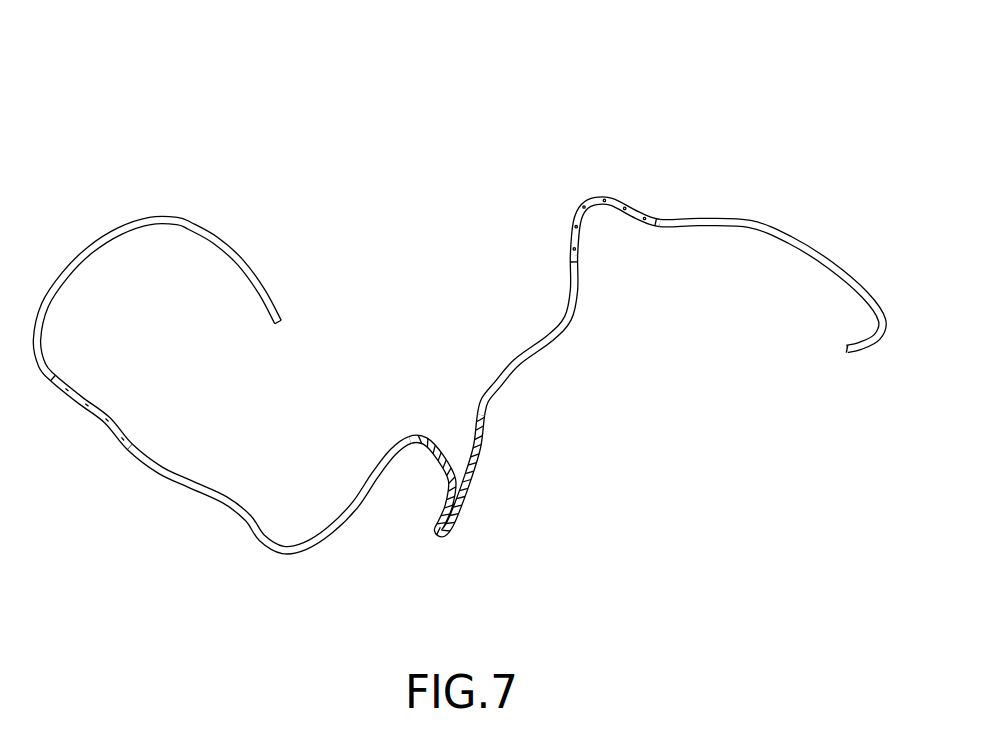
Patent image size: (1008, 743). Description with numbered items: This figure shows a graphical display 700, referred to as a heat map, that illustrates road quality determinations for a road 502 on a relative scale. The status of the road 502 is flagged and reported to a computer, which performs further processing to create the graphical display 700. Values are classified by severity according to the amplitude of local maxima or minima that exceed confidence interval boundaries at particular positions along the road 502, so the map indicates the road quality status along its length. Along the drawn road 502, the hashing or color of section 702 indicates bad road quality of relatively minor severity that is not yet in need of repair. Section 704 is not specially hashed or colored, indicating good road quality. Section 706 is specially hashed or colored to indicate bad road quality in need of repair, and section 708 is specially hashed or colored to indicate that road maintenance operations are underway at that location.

The graphical display 700 is at (748, 77).
The section 702 is at (610, 200).
The section 704 is at (541, 344).
The section 706 is at (474, 498).
The section 708 is at (108, 413).
The road 502 is at (820, 251).